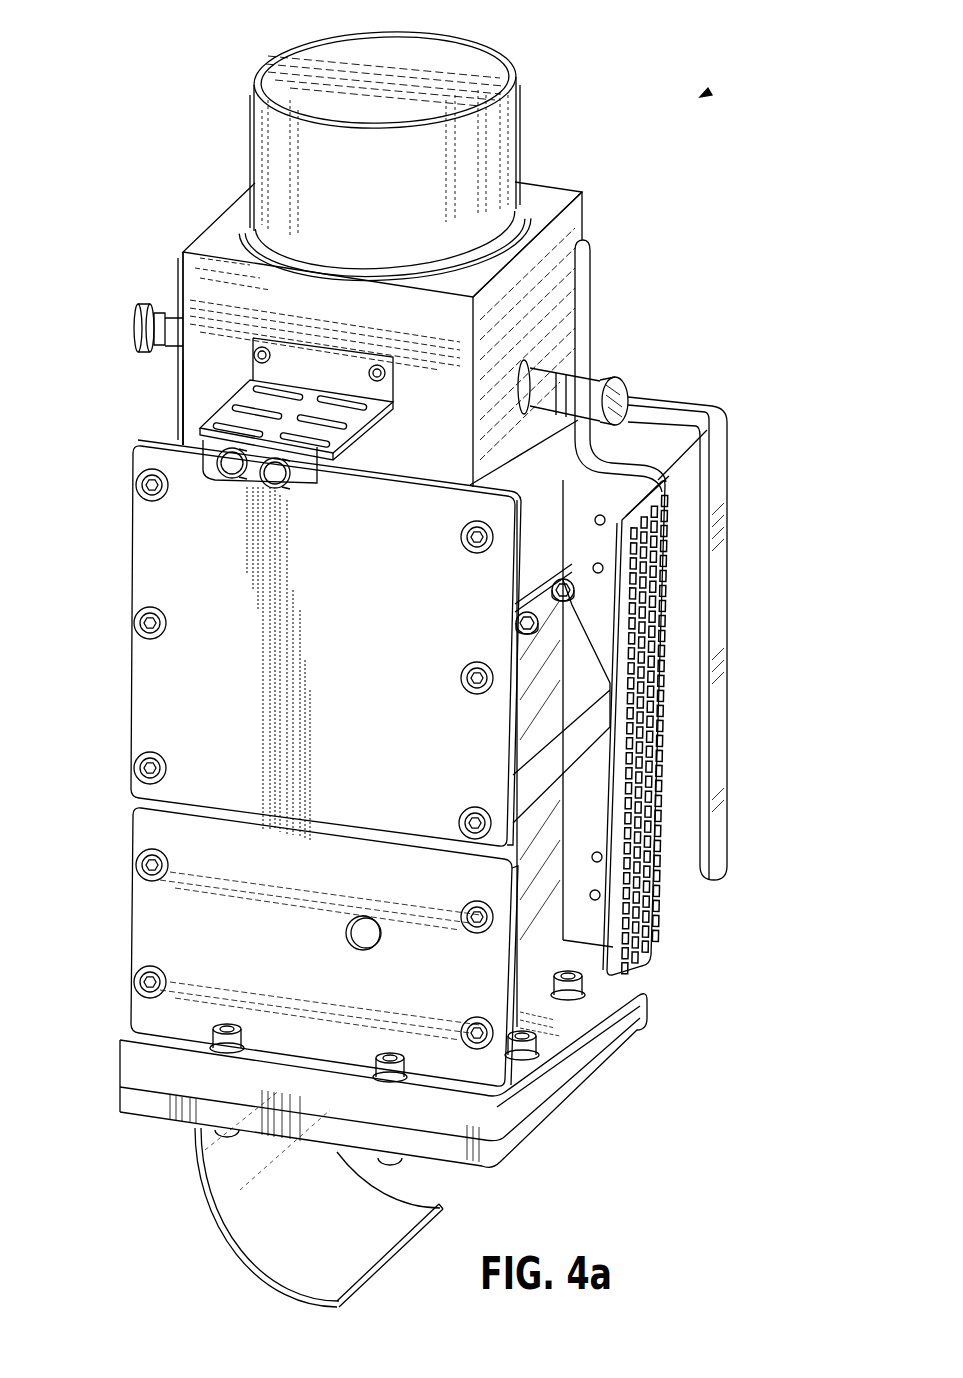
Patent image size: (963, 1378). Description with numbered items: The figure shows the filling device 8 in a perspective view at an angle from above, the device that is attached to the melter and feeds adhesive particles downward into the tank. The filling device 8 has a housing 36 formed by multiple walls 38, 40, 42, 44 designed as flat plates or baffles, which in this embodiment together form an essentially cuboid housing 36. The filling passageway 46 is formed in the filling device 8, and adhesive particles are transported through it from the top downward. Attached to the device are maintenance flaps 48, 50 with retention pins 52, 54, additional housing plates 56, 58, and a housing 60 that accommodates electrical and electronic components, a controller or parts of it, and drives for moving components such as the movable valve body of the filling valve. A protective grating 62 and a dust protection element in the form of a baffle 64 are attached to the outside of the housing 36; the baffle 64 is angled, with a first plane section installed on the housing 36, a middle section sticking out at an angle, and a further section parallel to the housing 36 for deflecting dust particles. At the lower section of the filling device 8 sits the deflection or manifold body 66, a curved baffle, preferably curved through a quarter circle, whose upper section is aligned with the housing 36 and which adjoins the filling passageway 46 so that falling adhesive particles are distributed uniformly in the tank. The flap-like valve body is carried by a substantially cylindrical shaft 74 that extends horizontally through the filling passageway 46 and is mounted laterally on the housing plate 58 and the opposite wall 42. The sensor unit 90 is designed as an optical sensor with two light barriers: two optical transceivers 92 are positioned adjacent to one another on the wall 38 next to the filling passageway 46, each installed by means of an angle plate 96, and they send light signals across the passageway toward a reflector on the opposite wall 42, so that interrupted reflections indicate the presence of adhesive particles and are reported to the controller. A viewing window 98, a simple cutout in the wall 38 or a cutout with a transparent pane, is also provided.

The filling device 8 is at (705, 92).
The housing 36 is at (532, 980).
The wall 38 is at (195, 410).
The wall 40 is at (555, 268).
The wall 42 is at (555, 184).
The wall 44 is at (178, 268).
The filling passageway 46 is at (432, 67).
The maintenance flap 48 is at (550, 332).
The maintenance flap 50 is at (185, 380).
The retention pin 52 is at (605, 382).
The retention pin 54 is at (152, 310).
The housing plate 56 is at (155, 733).
The housing plate 58 is at (155, 918).
The housing 60 is at (685, 536).
The protective grating 62 is at (660, 735).
The baffle 64 is at (592, 668).
The manifold body 66 is at (235, 1200).
The shaft 74 is at (373, 960).
The sensor unit 90 is at (260, 487).
The optical transceiver 92 is at (238, 505).
The angle plate 96 is at (212, 420).
The viewing window 98 is at (398, 400).